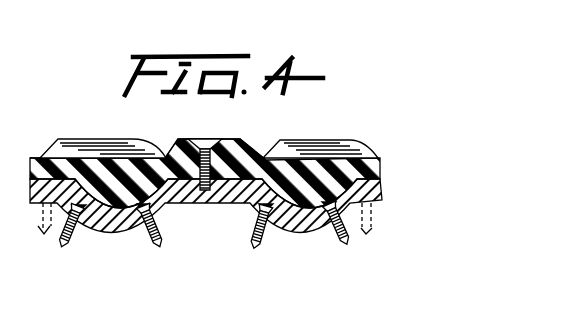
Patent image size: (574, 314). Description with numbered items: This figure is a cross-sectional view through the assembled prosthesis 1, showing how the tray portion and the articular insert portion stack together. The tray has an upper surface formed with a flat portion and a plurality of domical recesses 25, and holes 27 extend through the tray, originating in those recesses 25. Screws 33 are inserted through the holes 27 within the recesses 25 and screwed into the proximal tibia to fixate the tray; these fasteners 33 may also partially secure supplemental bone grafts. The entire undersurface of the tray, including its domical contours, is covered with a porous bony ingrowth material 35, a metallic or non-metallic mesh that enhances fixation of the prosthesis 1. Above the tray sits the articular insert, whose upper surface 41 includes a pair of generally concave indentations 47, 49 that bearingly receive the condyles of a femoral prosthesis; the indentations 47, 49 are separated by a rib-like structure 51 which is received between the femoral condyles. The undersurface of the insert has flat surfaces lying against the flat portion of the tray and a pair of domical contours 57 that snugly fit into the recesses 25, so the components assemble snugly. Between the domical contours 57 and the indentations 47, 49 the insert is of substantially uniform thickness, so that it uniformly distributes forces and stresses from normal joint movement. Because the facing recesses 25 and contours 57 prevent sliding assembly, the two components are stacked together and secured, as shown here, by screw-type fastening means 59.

The prosthesis 1 is at (343, 94).
The domical recesses 25 is at (352, 163).
The holes 27 is at (147, 200).
The screws 33 is at (72, 249).
The porous bony ingrowth material 35 is at (57, 208).
The upper surface 41 is at (113, 158).
The concave indentation 47 is at (80, 141).
The concave indentation 49 is at (327, 143).
The rib-like structure 51 is at (186, 150).
The domical contours 57 is at (96, 162).
The screw-type fastening means 59 is at (238, 144).